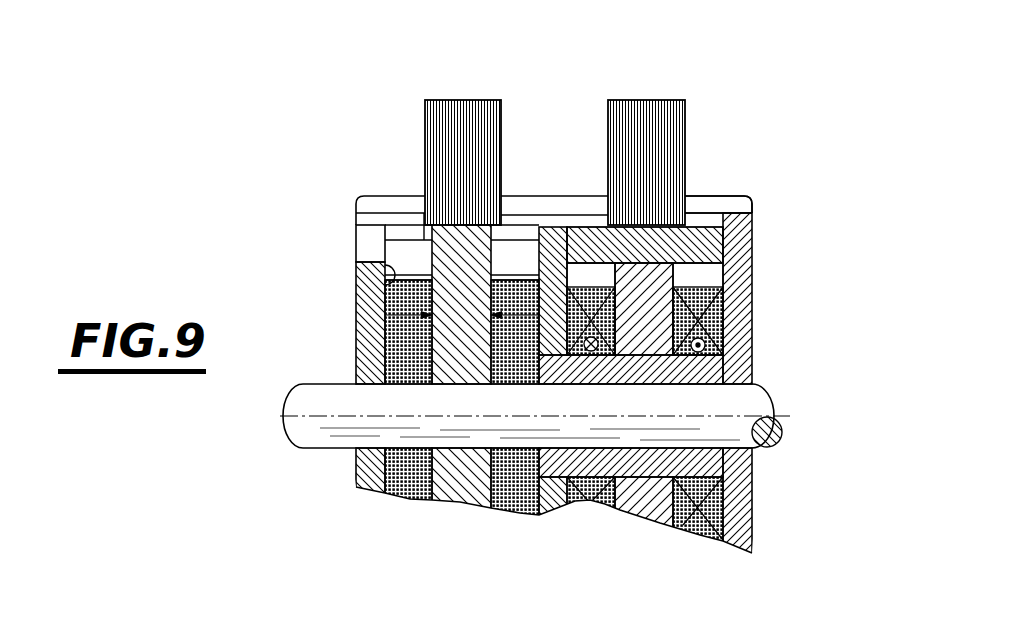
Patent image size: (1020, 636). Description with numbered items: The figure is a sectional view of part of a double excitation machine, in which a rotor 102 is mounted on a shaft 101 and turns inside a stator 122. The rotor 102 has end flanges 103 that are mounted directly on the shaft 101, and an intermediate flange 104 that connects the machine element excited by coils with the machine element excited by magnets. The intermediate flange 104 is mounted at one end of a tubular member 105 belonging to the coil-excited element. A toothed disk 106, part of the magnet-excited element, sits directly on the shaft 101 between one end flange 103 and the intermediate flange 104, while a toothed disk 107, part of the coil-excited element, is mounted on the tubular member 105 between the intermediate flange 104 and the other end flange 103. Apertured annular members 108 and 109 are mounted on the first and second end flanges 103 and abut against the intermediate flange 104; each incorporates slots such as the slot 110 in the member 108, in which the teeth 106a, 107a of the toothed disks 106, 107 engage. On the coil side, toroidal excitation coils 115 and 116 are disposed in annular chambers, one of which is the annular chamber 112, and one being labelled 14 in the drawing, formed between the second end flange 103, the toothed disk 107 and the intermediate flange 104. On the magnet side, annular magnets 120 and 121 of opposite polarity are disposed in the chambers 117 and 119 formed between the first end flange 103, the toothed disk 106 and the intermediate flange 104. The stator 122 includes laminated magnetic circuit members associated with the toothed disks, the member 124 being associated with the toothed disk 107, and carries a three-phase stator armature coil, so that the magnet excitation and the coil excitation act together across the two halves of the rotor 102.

The coil 14 is at (707, 277).
The shaft 101 is at (322, 422).
The rotor 102 is at (752, 322).
The end flanges 103 is at (372, 352).
The intermediate flange 104 is at (553, 250).
The tubular member 105 is at (745, 467).
The toothed disk 106 is at (402, 258).
The teeth 106a is at (456, 240).
The toothed disk 107 is at (740, 253).
The teeth 107a is at (647, 247).
The apertured annular member 108 is at (370, 243).
The apertured annular member 109 is at (633, 287).
The slot 110 is at (385, 277).
The annular chamber 112 is at (588, 277).
The toroidal excitation coil 115 is at (588, 500).
The toroidal excitation coil 116 is at (698, 530).
The chamber 117 is at (431, 268).
The chamber 119 is at (504, 247).
The annular magnet 120 is at (403, 493).
The annular magnet 121 is at (514, 500).
The stator 122 is at (692, 140).
The laminated magnetic circuit member 124 is at (713, 203).